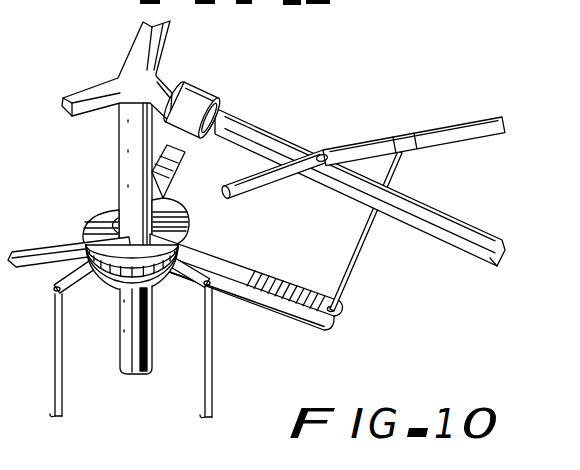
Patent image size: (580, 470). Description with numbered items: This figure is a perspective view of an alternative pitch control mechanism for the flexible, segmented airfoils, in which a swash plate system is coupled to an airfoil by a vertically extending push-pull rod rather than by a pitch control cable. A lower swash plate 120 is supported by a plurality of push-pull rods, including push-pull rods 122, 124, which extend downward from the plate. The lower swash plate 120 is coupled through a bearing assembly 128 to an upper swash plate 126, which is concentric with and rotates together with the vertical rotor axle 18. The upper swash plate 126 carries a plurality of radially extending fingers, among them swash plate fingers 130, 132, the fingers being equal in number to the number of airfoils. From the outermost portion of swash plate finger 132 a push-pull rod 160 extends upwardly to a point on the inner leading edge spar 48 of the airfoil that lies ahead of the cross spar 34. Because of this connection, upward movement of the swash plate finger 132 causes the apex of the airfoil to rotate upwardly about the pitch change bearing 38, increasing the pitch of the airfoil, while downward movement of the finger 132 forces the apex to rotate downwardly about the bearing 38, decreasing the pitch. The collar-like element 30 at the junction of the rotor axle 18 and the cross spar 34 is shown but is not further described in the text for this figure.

The vertical rotor axle 18 is at (120, 149).
The Y-shaped connector 30 is at (163, 78).
The cross spar 34 is at (272, 136).
The pitch change bearing 38 is at (216, 85).
The inner leading edge spar 48 is at (456, 125).
The lower swash plate 120 is at (96, 289).
The push-pull rod 122 is at (55, 388).
The push-pull rod 124 is at (213, 376).
The upper swash plate 126 is at (100, 217).
The bearing assembly 128 is at (157, 287).
The swash plate finger 130 is at (63, 247).
The swash plate finger 132 is at (272, 279).
The push-pull rod 160 is at (366, 274).